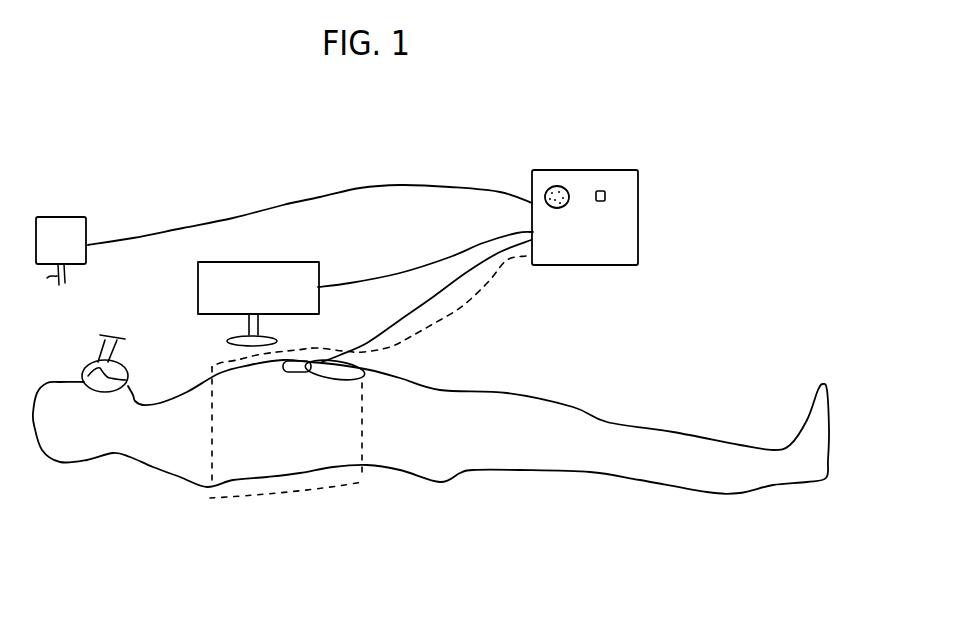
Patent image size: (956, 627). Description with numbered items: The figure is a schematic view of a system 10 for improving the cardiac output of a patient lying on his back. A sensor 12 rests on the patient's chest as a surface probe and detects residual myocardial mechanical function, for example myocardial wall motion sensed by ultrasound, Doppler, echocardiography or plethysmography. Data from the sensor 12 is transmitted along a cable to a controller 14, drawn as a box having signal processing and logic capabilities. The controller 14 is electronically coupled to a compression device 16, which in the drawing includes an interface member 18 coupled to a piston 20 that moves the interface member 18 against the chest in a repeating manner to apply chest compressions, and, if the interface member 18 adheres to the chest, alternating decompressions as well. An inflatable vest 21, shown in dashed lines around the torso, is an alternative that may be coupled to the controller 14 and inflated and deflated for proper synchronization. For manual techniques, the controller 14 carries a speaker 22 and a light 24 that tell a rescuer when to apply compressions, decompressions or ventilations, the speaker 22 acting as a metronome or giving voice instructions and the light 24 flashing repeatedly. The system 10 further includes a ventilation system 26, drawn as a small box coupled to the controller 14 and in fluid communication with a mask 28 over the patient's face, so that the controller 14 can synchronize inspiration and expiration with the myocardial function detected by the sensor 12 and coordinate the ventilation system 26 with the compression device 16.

The system 10 is at (487, 123).
The sensor 12 is at (362, 365).
The controller 14 is at (638, 222).
The compression device 16 is at (284, 262).
The interface member 18 is at (272, 339).
The piston 20 is at (262, 319).
The inflatable vest 21 is at (364, 419).
The speaker 22 is at (562, 187).
The light 24 is at (606, 195).
The ventilation system 26 is at (87, 227).
The mask 28 is at (128, 364).